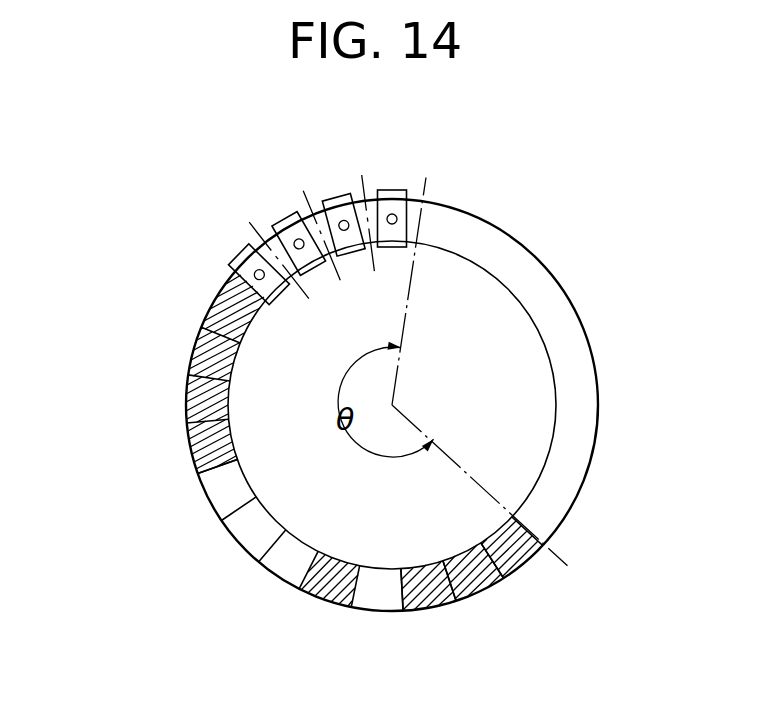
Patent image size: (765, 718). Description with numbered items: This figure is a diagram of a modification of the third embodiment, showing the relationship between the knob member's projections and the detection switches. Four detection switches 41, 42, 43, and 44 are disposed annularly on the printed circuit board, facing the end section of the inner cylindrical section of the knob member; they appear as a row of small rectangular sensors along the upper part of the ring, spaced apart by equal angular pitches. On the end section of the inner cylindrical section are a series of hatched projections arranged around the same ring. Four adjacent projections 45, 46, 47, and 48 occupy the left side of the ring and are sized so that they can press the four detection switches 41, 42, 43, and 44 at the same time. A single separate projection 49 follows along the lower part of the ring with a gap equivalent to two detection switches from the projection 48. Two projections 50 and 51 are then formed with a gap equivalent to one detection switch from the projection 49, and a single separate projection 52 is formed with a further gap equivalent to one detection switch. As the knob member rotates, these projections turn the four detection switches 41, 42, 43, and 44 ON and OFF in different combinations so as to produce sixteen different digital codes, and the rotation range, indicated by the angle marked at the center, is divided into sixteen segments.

The detection switch 41 is at (390, 188).
The detection switch 42 is at (332, 193).
The detection switch 43 is at (275, 212).
The detection switch 44 is at (232, 245).
The projection 45 is at (190, 442).
The projection 46 is at (192, 390).
The projection 47 is at (200, 340).
The projection 48 is at (215, 300).
The separate projection 49 is at (283, 575).
The projection 50 is at (377, 595).
The projection 51 is at (433, 595).
The separate projection 52 is at (523, 570).